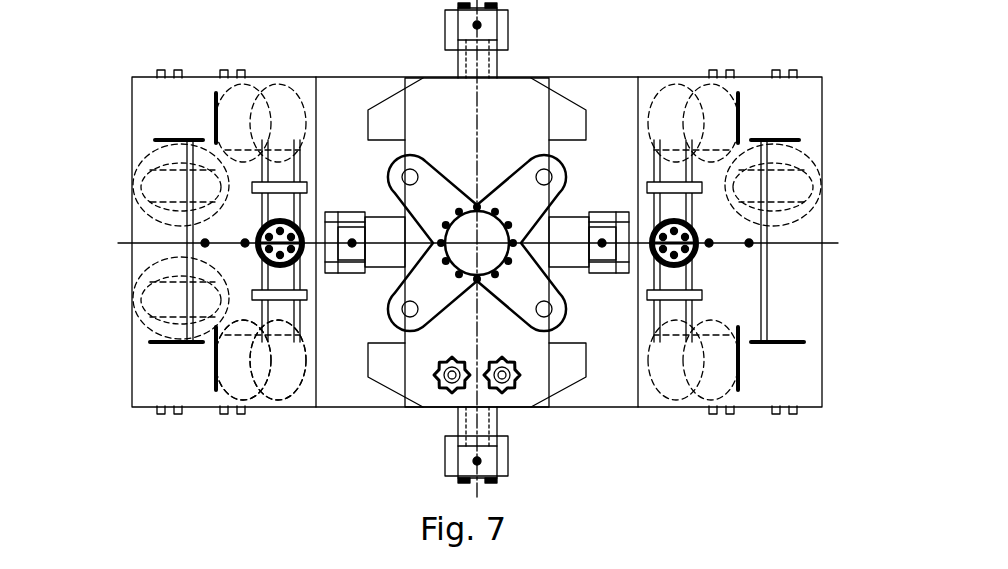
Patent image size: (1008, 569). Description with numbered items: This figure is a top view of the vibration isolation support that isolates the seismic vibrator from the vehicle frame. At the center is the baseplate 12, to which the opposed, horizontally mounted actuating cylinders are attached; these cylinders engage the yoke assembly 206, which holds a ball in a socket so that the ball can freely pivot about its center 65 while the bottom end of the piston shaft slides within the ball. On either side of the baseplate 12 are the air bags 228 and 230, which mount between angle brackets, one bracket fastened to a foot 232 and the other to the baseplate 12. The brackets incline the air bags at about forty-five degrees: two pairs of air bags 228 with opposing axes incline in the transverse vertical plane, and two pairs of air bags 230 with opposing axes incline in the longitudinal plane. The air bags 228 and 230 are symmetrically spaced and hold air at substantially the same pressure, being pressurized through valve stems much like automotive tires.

The baseplate 12 is at (382, 410).
The center 65 is at (470, 240).
The yoke assembly 206 is at (823, 383).
The air bags 228 is at (288, 400).
The air bags 230 is at (147, 302).
The foot 232 is at (132, 407).